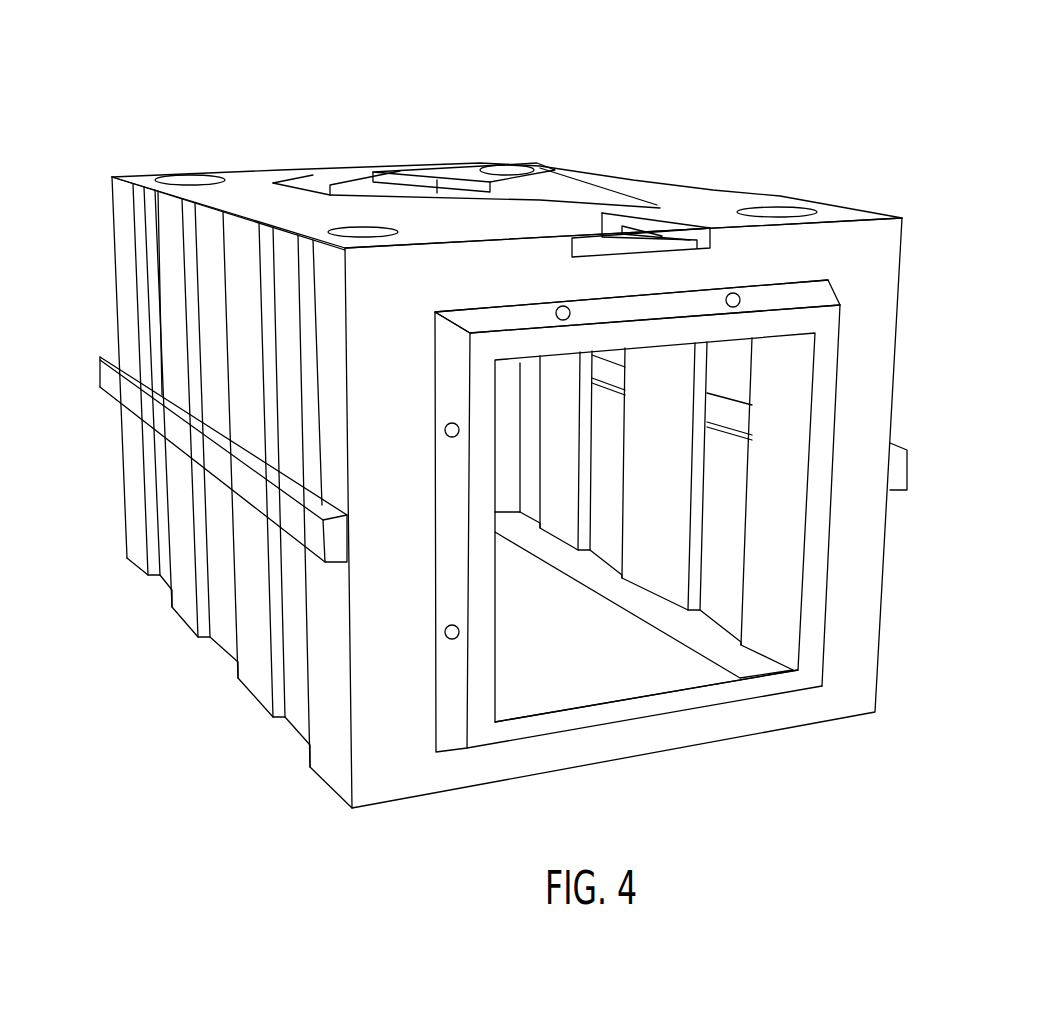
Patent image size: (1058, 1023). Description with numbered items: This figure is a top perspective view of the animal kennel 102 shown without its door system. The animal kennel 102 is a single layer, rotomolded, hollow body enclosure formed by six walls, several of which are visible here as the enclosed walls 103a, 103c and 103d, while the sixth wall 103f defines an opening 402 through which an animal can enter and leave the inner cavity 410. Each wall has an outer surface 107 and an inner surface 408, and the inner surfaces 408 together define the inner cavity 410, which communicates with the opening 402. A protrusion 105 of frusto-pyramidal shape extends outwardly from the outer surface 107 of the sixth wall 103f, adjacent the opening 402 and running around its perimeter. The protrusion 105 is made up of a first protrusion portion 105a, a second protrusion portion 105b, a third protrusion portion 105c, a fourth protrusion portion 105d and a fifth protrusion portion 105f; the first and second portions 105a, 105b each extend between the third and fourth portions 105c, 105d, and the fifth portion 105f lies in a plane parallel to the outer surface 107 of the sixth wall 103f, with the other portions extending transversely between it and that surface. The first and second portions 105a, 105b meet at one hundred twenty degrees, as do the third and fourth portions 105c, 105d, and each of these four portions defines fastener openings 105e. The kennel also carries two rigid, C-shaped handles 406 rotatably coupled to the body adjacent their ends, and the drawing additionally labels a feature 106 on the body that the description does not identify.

The animal kennel 102 is at (583, 78).
The wall 103a is at (344, 180).
The wall 103c is at (260, 357).
The wall 103d is at (776, 196).
The sixth wall 103f is at (397, 635).
The protrusion 105 is at (798, 282).
The first protrusion portion 105a is at (771, 292).
The second protrusion portion 105b is at (685, 712).
The third protrusion portion 105c is at (455, 735).
The fourth protrusion portion 105d is at (832, 467).
The fastener openings 105e is at (449, 625).
The fifth protrusion portion 105f is at (600, 715).
The mounting hole 106 is at (245, 176).
The outer surface 107 is at (260, 628).
The opening 402 is at (808, 557).
The handle 406 is at (590, 237).
The inner surface 408 is at (685, 463).
The inner cavity 410 is at (718, 407).